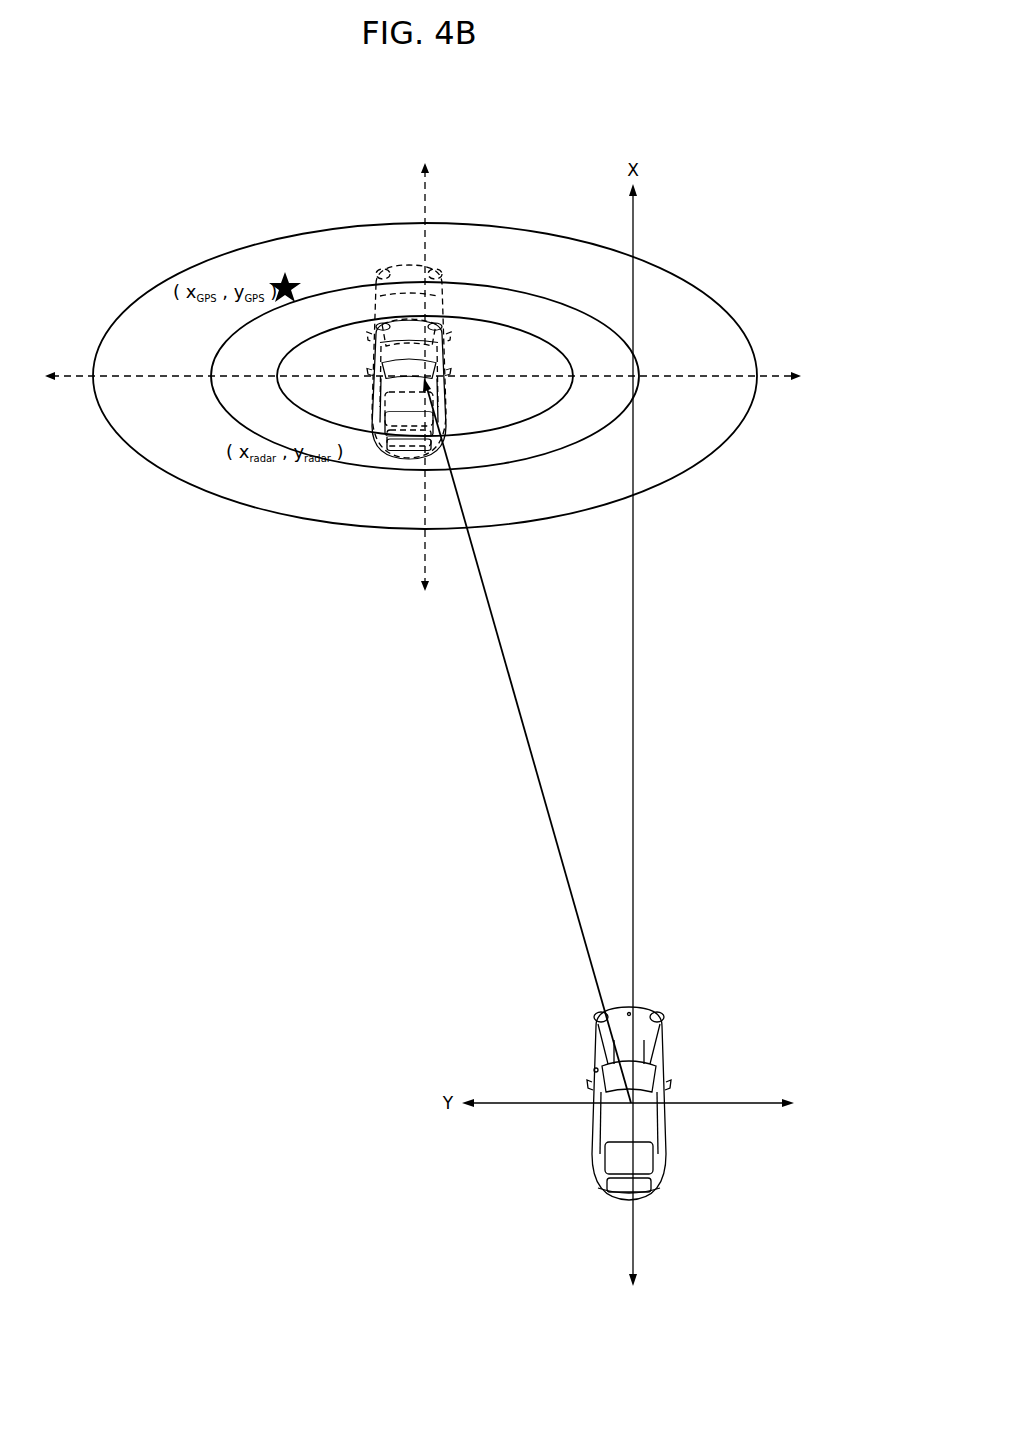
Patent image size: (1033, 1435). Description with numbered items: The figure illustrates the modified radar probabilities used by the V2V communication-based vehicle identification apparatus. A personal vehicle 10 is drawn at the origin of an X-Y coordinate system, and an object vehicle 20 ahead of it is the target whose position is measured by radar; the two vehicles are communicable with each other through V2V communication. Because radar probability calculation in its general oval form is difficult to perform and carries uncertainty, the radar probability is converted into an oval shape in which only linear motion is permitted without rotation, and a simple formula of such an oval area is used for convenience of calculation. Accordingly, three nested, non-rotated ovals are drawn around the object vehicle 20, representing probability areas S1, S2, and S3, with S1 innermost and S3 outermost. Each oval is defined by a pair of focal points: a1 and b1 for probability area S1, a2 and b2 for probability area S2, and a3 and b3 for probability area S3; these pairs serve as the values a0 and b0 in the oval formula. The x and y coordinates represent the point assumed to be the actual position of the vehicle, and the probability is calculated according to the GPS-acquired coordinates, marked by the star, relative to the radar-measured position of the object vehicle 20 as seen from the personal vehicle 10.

The personal vehicle 10 is at (660, 1039).
The object vehicle 20 is at (368, 300).
The probability area S1 is at (541, 339).
The probability area S2 is at (561, 304).
The probability area S3 is at (600, 247).
The focal point a1 is at (409, 316).
The focal point a2 is at (409, 282).
The focal point a3 is at (409, 224).
The focal point b1 is at (587, 385).
The focal point b2 is at (652, 385).
The focal point b3 is at (769, 385).